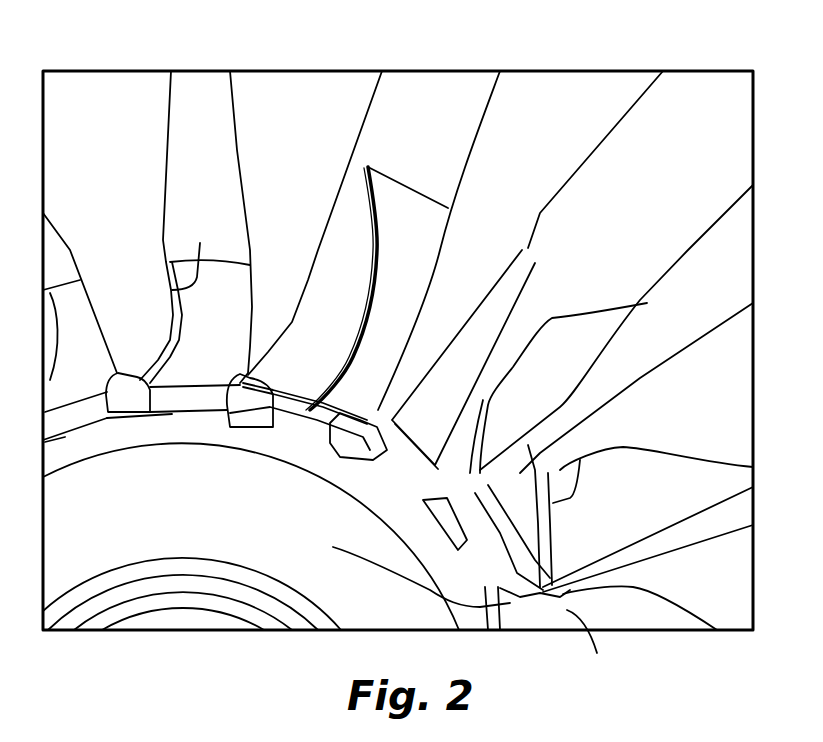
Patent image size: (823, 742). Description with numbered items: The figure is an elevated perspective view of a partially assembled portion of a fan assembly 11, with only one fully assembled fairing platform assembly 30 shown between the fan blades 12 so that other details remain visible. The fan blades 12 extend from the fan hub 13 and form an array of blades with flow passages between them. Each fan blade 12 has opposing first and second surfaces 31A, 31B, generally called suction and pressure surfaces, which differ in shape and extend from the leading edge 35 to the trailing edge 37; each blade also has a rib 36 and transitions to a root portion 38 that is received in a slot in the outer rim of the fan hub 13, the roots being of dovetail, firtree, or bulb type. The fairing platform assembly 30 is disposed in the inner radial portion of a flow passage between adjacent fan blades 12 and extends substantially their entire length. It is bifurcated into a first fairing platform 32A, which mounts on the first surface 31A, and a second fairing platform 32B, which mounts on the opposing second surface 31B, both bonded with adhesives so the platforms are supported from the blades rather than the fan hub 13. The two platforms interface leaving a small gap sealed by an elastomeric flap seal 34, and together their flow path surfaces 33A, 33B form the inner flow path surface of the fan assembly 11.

The fan assembly 11 is at (30, 108).
The fan blades 12 is at (100, 97).
The fan hub 13 is at (63, 538).
The fairing platform assembly 30 is at (434, 104).
The first surface 31A is at (611, 466).
The second surface 31B is at (408, 340).
The first fairing platform 32A is at (423, 197).
The second fairing platform 32B is at (358, 164).
The flow path surface 33A is at (462, 347).
The flow path surface 33B is at (396, 321).
The flap seal 34 is at (565, 262).
The leading edge 35 is at (237, 150).
The rib 36 is at (527, 380).
The trailing edge 37 is at (597, 312).
The root portion 38 is at (130, 402).